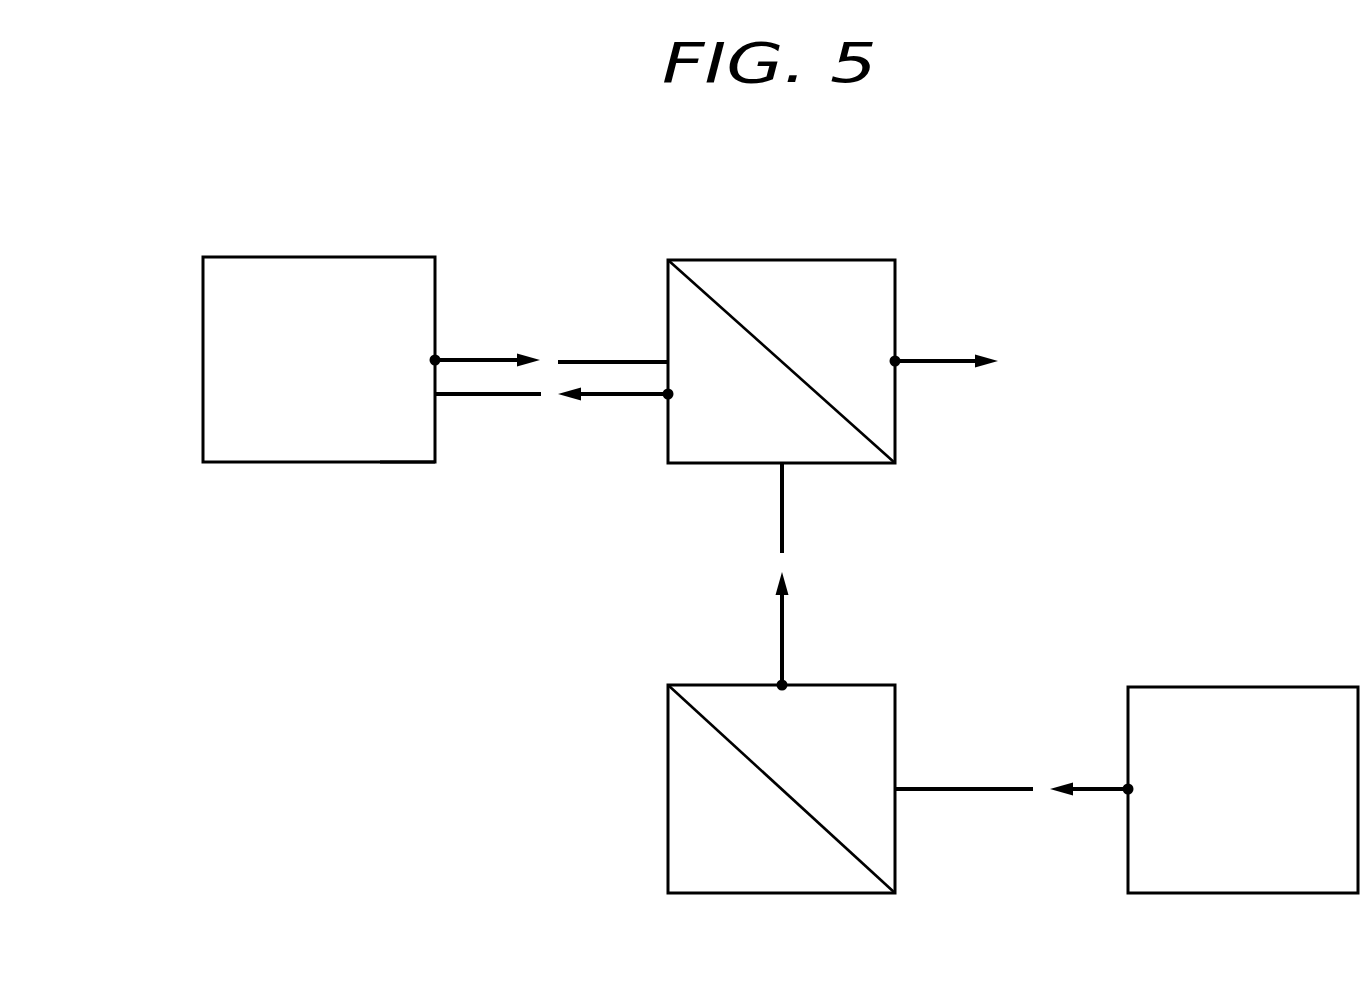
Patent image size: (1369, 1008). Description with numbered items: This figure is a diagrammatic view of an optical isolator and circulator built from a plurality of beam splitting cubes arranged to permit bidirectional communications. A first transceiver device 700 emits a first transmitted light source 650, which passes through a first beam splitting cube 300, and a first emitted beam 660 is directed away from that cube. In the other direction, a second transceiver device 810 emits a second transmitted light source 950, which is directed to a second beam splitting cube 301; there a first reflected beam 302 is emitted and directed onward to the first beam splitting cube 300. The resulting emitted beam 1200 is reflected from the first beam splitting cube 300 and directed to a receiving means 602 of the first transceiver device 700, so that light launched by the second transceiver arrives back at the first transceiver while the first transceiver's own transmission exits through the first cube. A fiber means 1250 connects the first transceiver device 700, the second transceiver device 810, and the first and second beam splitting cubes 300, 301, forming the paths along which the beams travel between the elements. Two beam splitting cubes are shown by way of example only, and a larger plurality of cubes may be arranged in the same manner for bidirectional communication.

The first transceiver device 700 is at (227, 445).
The receiving means 602 is at (417, 447).
The first transmitted light source 650 is at (473, 358).
The fiber means 1250 is at (467, 397).
The resulting emitted beam 1200 is at (615, 402).
The first beam splitting cube 300 is at (808, 272).
The first emitted beam 660 is at (935, 360).
The first reflected beam 302 is at (780, 642).
The second beam splitting cube 301 is at (860, 702).
The second transmitted light source 950 is at (1087, 785).
The second transceiver device 810 is at (1302, 698).